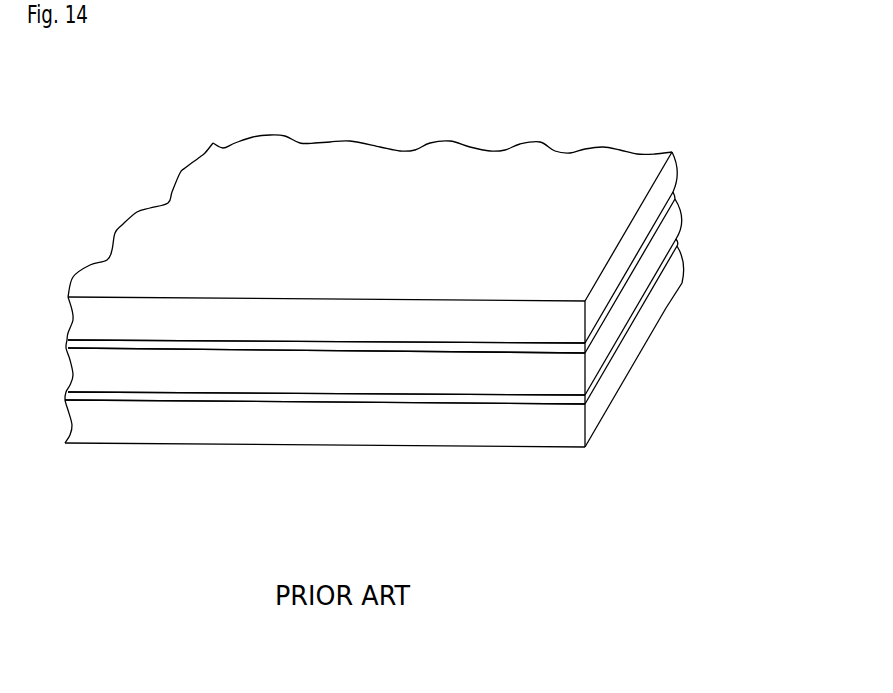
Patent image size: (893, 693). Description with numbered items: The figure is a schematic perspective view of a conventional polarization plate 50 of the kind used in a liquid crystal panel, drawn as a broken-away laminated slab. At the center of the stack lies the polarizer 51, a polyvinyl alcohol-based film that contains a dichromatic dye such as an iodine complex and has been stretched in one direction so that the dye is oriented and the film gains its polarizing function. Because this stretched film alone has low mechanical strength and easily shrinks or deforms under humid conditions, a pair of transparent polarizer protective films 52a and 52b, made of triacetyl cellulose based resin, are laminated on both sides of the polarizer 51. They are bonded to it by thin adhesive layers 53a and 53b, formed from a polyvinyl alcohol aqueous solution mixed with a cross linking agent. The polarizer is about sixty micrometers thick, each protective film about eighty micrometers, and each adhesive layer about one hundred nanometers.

The polarization plate 50 is at (342, 543).
The polarizer 51 is at (686, 215).
The polarizer protective film 52a is at (677, 164).
The polarizer protective film 52b is at (685, 265).
The adhesive layer 53a is at (676, 197).
The adhesive layer 53b is at (678, 245).